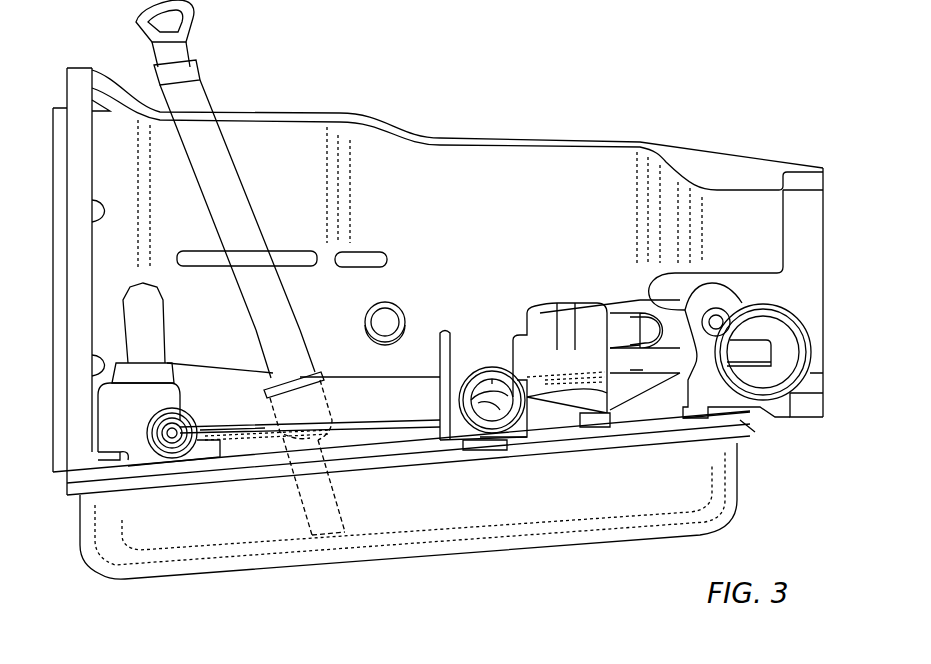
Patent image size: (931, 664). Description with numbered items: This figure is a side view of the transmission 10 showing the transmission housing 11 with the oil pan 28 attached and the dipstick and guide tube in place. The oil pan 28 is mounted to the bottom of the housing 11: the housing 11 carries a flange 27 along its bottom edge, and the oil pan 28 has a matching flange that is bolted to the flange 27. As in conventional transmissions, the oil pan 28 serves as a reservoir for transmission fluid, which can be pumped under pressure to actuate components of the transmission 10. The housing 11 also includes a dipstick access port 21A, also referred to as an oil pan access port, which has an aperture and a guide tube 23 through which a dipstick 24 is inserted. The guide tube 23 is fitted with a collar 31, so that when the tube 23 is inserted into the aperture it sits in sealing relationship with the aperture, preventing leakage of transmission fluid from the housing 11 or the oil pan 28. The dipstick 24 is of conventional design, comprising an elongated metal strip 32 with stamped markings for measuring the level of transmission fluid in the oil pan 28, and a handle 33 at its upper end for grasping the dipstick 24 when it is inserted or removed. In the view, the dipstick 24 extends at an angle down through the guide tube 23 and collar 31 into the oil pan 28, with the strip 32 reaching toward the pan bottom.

The transmission 10 is at (757, 113).
The transmission housing 11 is at (590, 140).
The dipstick access port 21A is at (336, 400).
The guide tube 23 is at (247, 305).
The dipstick 24 is at (307, 297).
The flange 27 is at (740, 420).
The oil pan 28 is at (737, 483).
The collar 31 is at (265, 397).
The elongated metal strip 32 is at (353, 498).
The handle 33 is at (138, 15).